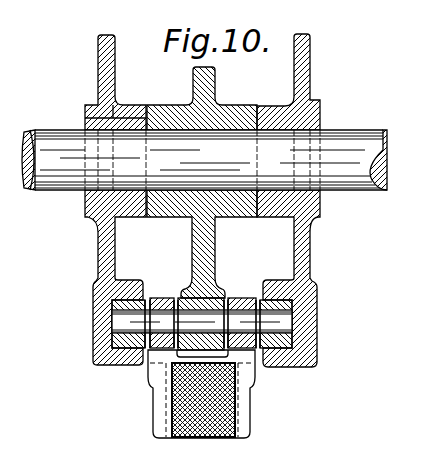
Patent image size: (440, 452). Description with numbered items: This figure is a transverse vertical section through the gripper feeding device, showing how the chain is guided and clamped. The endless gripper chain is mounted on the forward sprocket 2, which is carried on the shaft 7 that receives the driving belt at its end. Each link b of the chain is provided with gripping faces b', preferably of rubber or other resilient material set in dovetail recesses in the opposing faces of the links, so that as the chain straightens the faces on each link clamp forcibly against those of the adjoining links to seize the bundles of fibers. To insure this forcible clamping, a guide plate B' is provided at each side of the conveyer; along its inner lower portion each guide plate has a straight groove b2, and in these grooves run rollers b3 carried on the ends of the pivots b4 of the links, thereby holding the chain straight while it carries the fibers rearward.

The guide plate B' is at (201, 200).
The forward sprocket 2 is at (232, 213).
The shaft 7 is at (336, 152).
The straight groove b2 is at (110, 323).
The rollers b3 is at (103, 362).
The pivots b4 is at (293, 310).
The link b is at (192, 394).
The gripping face b' is at (232, 400).